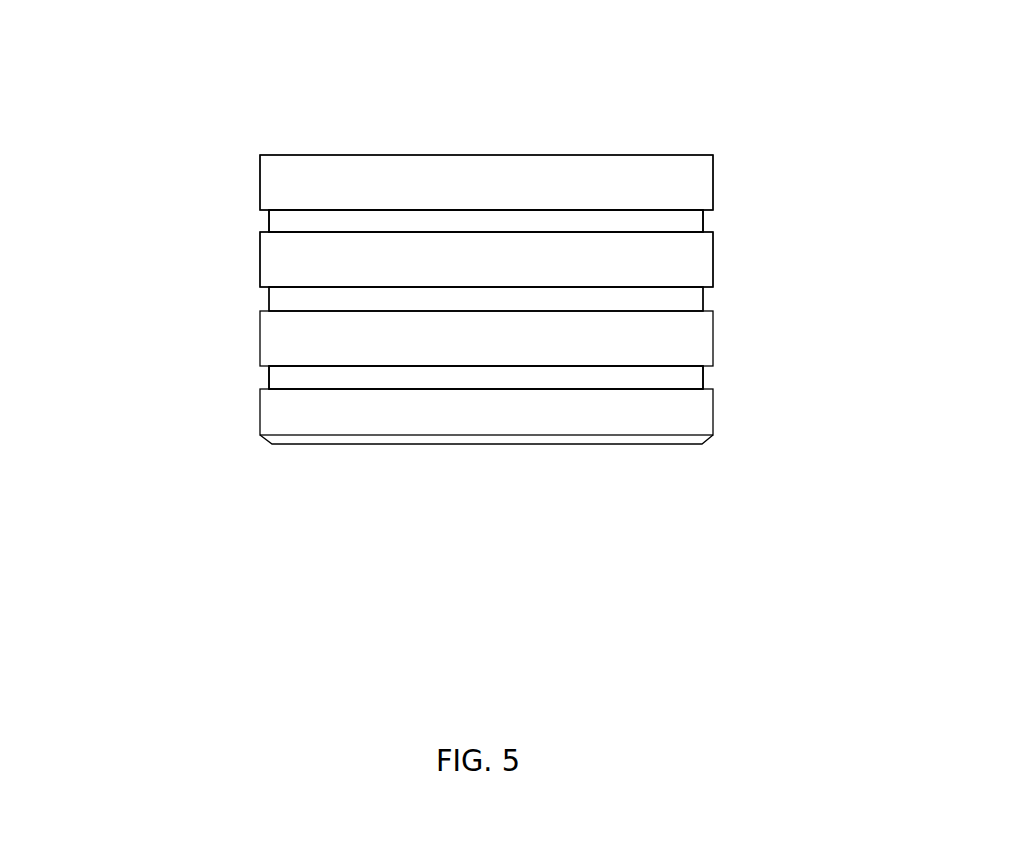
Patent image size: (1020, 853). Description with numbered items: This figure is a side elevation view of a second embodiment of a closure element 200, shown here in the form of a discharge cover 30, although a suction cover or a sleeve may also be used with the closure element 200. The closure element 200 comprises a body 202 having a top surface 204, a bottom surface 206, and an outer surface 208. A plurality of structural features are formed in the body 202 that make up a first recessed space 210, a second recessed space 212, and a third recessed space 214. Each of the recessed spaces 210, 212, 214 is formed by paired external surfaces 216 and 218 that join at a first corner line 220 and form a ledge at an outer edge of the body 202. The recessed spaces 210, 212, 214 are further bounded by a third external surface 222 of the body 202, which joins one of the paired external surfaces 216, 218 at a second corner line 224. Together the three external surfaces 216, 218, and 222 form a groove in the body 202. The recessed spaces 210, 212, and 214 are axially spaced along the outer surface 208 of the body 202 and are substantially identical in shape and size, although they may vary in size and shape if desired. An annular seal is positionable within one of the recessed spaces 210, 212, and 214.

The closure element 200 is at (598, 80).
The top surface 204 is at (383, 155).
The discharge cover 30 is at (337, 189).
The body 202 is at (683, 249).
The bottom surface 206 is at (548, 444).
The outer surface 208 is at (258, 260).
The first recessed space 210 is at (714, 223).
The second recessed space 212 is at (714, 299).
The third recessed space 214 is at (715, 373).
The paired external surface 216 is at (268, 372).
The paired external surface 218 is at (266, 300).
The first corner line 220 is at (268, 215).
The third external surface 222 is at (268, 381).
The second corner line 224 is at (268, 226).